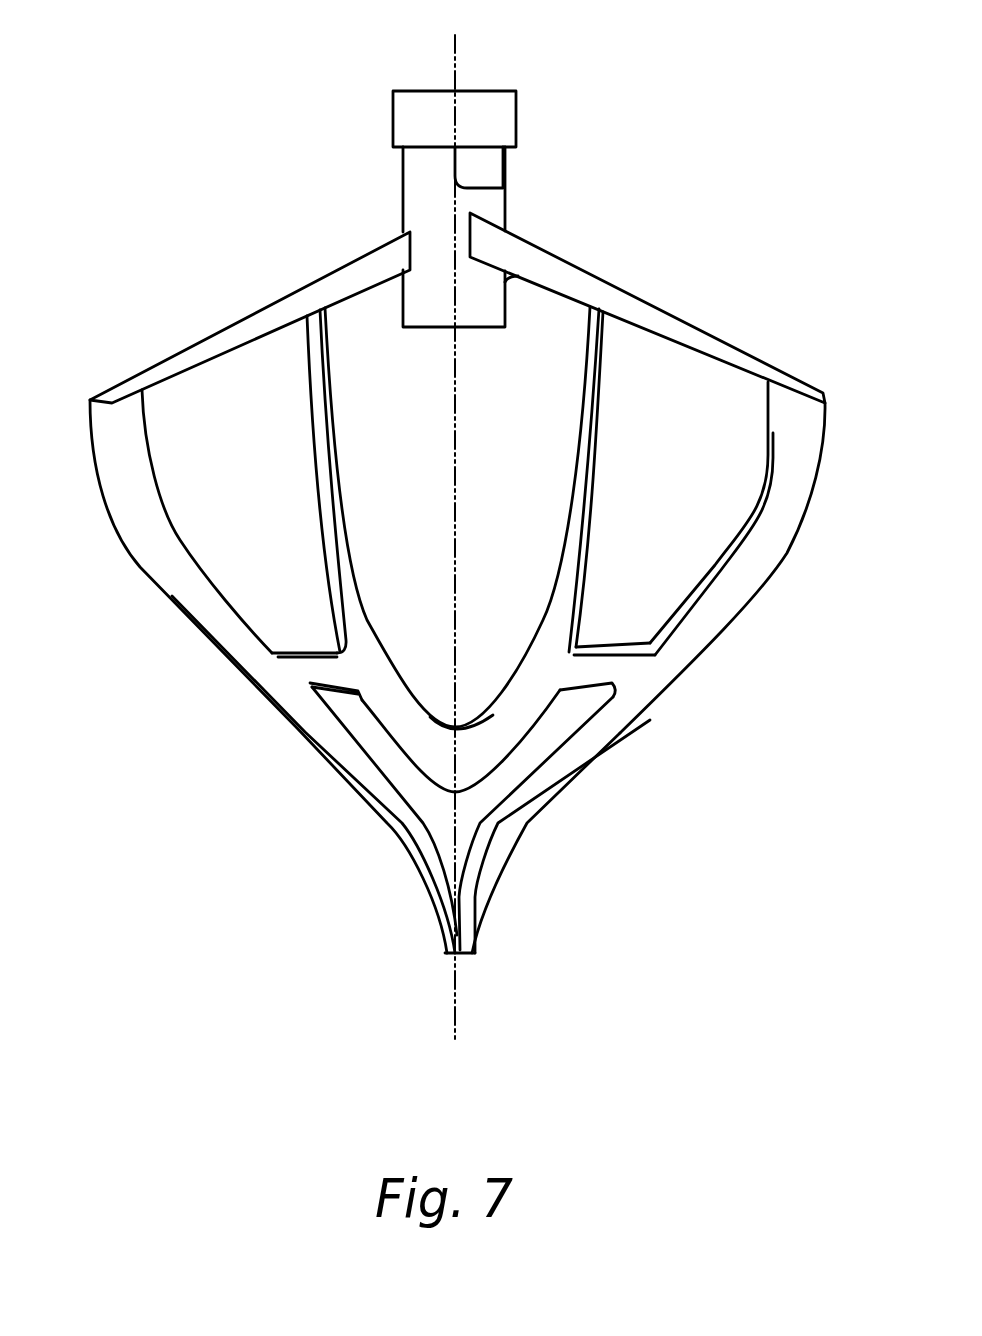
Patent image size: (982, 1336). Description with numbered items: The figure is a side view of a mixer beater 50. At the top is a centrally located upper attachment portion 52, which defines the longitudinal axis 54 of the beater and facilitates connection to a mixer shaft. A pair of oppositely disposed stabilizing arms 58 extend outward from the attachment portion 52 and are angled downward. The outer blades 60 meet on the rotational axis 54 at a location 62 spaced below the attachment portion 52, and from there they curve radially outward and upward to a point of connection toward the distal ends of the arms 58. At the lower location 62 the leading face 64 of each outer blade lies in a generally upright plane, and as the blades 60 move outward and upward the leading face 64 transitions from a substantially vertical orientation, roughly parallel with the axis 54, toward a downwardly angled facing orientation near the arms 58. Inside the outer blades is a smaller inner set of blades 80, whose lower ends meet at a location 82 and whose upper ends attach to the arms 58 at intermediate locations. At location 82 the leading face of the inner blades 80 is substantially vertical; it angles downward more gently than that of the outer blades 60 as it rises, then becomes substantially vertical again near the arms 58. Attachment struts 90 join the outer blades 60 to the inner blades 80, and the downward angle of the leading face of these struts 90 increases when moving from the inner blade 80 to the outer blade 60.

The beater 50 is at (745, 102).
The upper attachment portion 52 is at (418, 197).
The longitudinal axis 54 is at (455, 58).
The stabilizing arms 58 is at (243, 328).
The outer blades 60 is at (152, 542).
The location 62 is at (467, 935).
The leading face 64 is at (688, 648).
The inner blades 80 is at (330, 508).
The location 82 is at (483, 745).
The attachment struts 90 is at (305, 668).